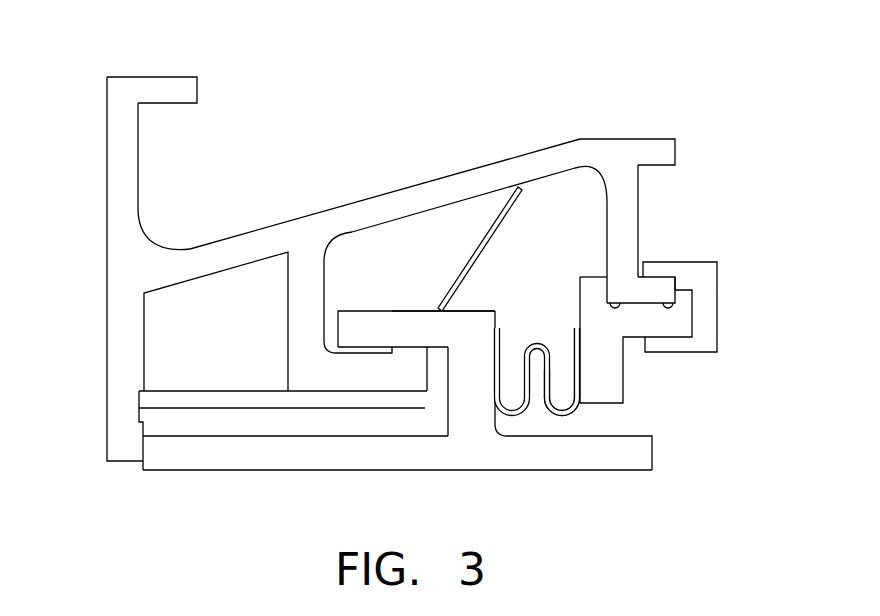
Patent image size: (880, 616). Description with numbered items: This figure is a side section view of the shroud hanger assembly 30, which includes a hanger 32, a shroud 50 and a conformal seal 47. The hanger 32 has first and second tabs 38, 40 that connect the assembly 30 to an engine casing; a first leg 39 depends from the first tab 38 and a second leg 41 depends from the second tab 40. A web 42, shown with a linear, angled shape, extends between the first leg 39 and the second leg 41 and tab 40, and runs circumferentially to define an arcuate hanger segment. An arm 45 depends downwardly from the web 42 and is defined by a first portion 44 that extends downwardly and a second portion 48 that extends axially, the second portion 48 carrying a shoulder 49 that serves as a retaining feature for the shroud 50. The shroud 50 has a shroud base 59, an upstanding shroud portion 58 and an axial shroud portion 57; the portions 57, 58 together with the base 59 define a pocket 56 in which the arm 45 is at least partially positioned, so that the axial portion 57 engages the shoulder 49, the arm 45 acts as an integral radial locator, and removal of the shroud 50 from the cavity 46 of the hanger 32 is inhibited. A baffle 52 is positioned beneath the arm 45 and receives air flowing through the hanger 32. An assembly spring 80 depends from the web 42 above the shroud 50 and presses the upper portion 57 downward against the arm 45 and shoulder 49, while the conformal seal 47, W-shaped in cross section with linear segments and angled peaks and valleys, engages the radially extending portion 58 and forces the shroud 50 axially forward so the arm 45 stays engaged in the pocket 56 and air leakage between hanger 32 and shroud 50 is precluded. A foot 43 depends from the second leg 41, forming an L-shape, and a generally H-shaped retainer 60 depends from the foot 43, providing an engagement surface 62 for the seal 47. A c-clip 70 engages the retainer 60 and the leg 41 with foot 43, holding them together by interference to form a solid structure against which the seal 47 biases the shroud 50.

The shroud hanger assembly 30 is at (415, 265).
The hanger 32 is at (153, 241).
The first tab 38 is at (169, 88).
The first leg 39 is at (118, 165).
The second tab 40 is at (657, 150).
The second leg 41 is at (625, 215).
The web 42 is at (453, 226).
The foot 43 is at (660, 283).
The first portion 44 is at (300, 312).
The arm 45 is at (328, 275).
The cavity 46 is at (423, 238).
The conformal seal 47 is at (578, 412).
The second portion 48 is at (409, 387).
The shoulder 49 is at (408, 352).
The shroud 50 is at (397, 418).
The baffle 52 is at (241, 408).
The pocket 56 is at (433, 425).
The axial shroud portion 57 is at (443, 330).
The upstanding shroud portion 58 is at (572, 360).
The shroud base 59 is at (362, 460).
The retainer 60 is at (608, 368).
The engagement surface 62 is at (641, 310).
The c-clip 70 is at (722, 301).
The assembly spring 80 is at (495, 216).